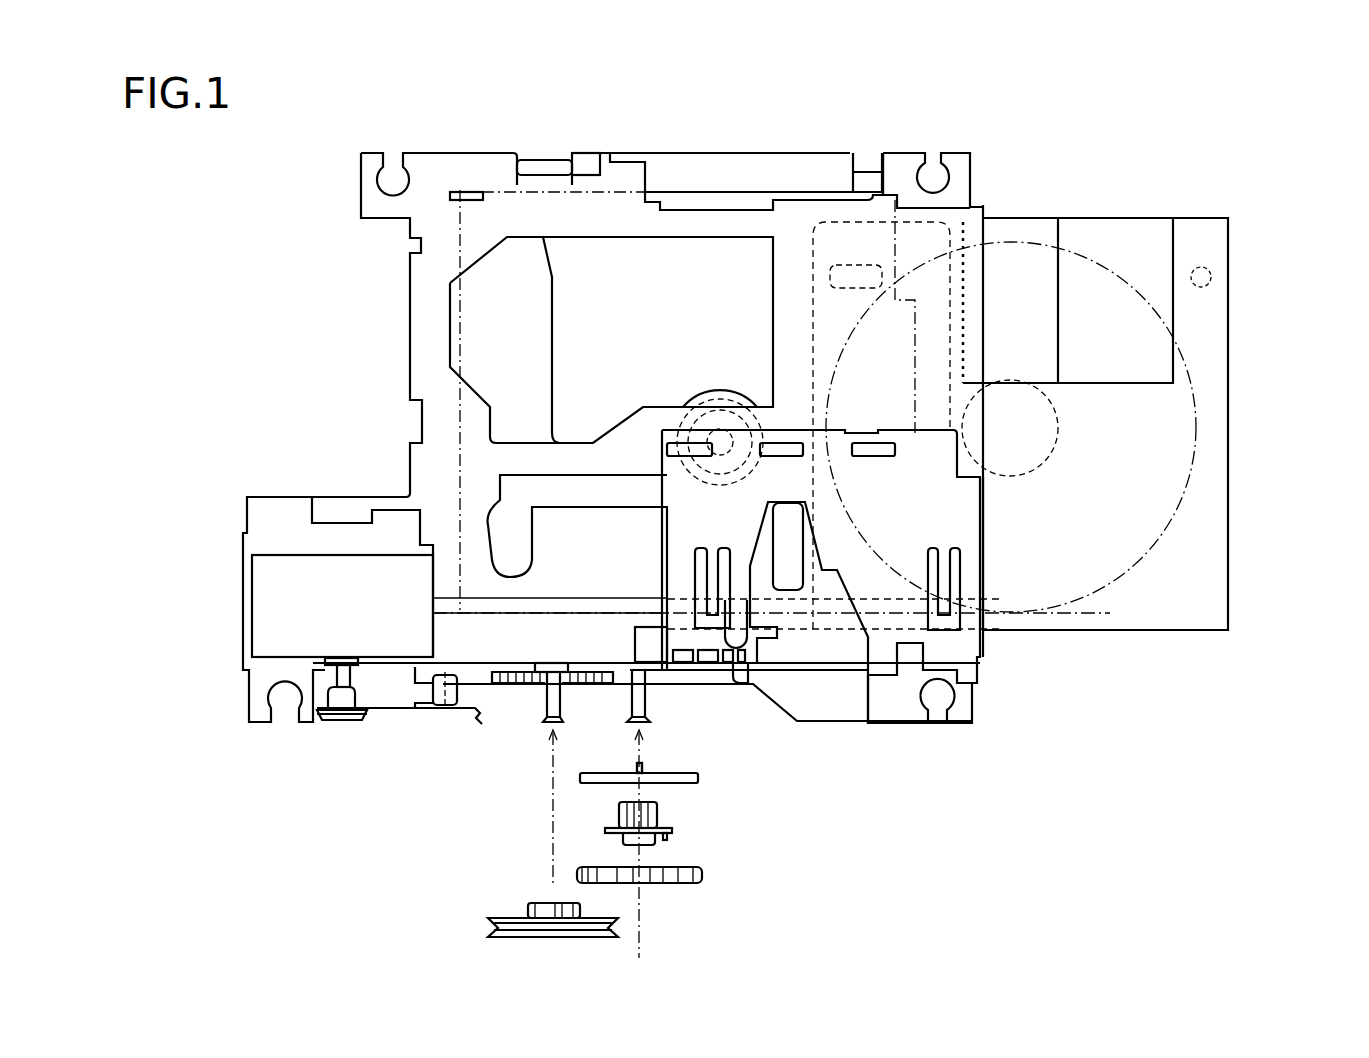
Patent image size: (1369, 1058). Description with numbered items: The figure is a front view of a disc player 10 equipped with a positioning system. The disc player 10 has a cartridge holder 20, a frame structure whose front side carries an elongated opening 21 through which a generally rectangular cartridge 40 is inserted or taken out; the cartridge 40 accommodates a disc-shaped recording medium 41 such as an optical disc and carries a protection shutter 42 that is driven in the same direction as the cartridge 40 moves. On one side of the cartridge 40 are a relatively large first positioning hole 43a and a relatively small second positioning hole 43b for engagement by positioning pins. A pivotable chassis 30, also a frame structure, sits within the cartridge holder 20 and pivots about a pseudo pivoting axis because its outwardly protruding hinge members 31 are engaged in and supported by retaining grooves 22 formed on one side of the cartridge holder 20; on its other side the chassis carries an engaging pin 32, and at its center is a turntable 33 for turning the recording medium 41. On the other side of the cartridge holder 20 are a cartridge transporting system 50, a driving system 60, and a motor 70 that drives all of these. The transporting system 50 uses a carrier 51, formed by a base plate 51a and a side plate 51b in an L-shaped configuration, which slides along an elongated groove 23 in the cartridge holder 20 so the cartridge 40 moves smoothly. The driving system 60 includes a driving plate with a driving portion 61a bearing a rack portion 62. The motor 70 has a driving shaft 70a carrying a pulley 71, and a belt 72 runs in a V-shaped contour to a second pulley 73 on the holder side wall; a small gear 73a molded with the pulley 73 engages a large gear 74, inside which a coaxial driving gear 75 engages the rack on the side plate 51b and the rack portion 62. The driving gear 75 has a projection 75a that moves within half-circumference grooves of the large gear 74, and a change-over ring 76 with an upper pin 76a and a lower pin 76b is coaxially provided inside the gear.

The disc player 10 is at (331, 428).
The cartridge holder 20 is at (423, 337).
The elongated opening 21 is at (985, 553).
The retaining grooves 22 is at (533, 175).
The elongated groove 23 is at (797, 600).
The pivotable chassis 30 is at (455, 477).
The hinge members 31 is at (560, 167).
The engaging pin 32 is at (732, 665).
The turntable 33 is at (722, 398).
The cartridge 40 is at (1217, 255).
The disc-shaped recording medium 41 is at (1195, 408).
The protection shutter 42 is at (1025, 233).
The first positioning hole 43a is at (833, 273).
The second positioning hole 43b is at (1205, 283).
The cartridge transporting system 50 is at (888, 824).
The carrier 51 is at (962, 662).
The base plate 51a is at (905, 485).
The side plate 51b is at (878, 677).
The driving system 60 is at (510, 689).
The driving portion 61a is at (533, 685).
The rack portion 62 is at (600, 683).
The motor 70 is at (265, 615).
The driving shaft 70a is at (333, 673).
The pulley 71 is at (326, 693).
The belt 72 is at (378, 708).
The pulley 73 is at (513, 918).
The small gear 73a is at (535, 903).
The large gear 74 is at (702, 875).
The driving gear 75 is at (657, 812).
The projection 75a is at (668, 836).
The change-over ring 76 is at (698, 778).
The upper pin 76a is at (642, 765).
The lower pin 76b is at (639, 768).